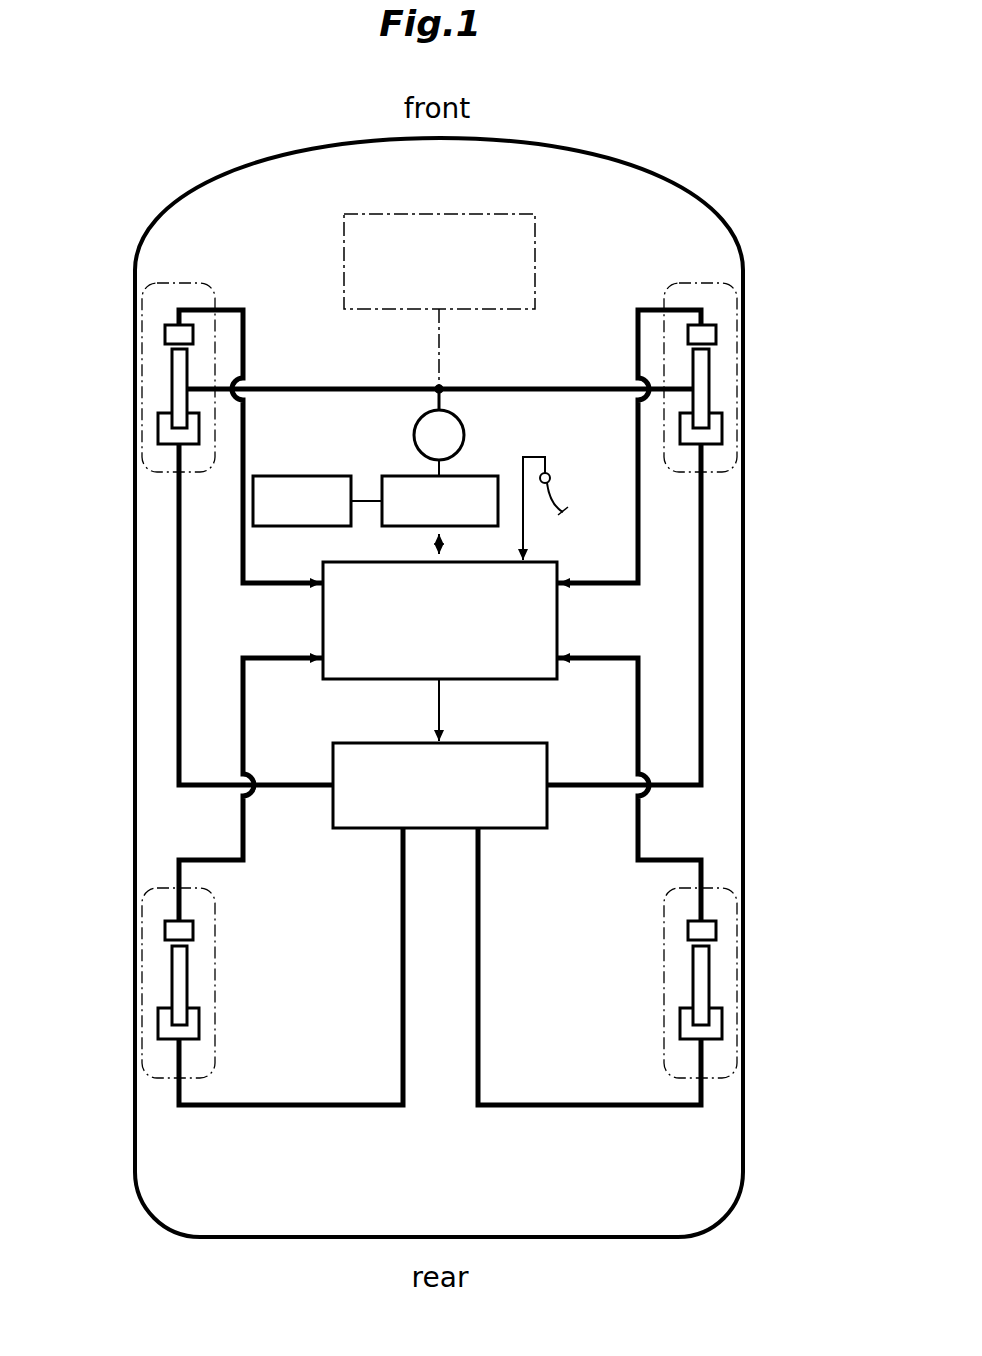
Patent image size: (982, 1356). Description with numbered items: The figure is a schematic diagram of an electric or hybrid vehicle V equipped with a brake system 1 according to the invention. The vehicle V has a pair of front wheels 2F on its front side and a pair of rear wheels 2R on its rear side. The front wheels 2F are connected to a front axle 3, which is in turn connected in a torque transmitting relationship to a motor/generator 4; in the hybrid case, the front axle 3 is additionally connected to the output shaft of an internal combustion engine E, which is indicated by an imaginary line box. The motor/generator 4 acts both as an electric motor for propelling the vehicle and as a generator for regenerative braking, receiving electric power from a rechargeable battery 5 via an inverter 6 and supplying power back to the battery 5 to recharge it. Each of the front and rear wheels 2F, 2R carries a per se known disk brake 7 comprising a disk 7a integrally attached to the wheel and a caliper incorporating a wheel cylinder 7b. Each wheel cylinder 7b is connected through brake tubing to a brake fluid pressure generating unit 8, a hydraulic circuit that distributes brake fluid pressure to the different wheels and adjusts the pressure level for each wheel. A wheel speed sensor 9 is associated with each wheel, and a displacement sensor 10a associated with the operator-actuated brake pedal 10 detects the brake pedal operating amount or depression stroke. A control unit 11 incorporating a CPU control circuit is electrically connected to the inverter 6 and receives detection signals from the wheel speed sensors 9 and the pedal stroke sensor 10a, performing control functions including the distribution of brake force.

The brake system 1 is at (766, 640).
The vehicle V is at (598, 161).
The internal combustion engine E is at (536, 247).
The front wheels 2F is at (141, 292).
The rear wheels 2R is at (142, 1076).
The front axle 3 is at (338, 388).
The motor/generator 4 is at (462, 420).
The battery 5 is at (288, 476).
The inverter 6 is at (388, 476).
The disk brake 7 is at (145, 479).
The disk 7a is at (172, 387).
The wheel cylinder 7b is at (158, 432).
The brake fluid pressure generating unit 8 is at (490, 744).
The wheel speed sensor 9 is at (165, 336).
The brake pedal 10 is at (566, 506).
The displacement sensor 10a is at (552, 476).
The control unit 11 is at (323, 628).